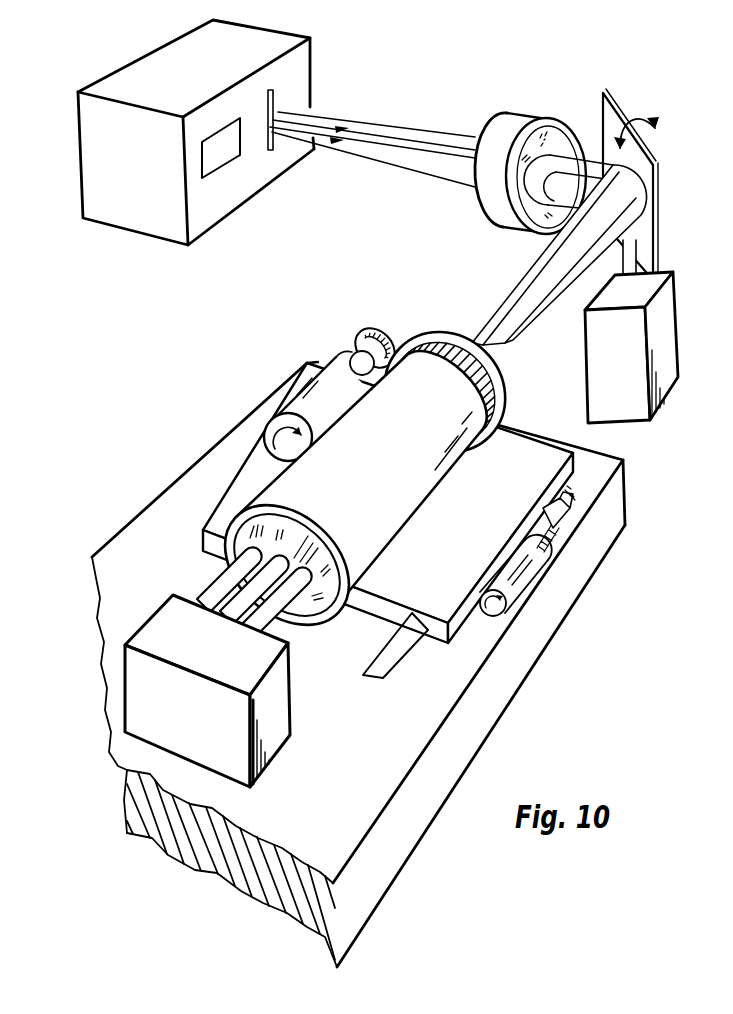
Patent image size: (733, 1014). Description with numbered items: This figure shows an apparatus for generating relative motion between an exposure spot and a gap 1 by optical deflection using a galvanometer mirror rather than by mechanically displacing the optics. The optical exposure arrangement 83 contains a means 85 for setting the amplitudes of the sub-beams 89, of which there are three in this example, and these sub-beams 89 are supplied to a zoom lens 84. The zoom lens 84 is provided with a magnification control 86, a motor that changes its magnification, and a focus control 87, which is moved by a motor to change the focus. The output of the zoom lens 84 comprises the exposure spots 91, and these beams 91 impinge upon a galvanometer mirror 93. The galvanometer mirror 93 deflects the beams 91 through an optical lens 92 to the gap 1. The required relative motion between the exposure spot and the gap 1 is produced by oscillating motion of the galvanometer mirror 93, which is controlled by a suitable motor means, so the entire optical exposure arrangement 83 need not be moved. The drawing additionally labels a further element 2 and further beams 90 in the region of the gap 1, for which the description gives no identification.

The gap 1 is at (273, 142).
The window of light source housing 2 is at (222, 158).
The optical exposure arrangement 83 is at (233, 453).
The zoom lens 84 is at (387, 521).
The means for setting the amplitudes of the sub-beams 85 is at (277, 710).
The magnification setting means 86 is at (328, 390).
The focusing setting means 87 is at (530, 457).
The sub-beams 89 is at (218, 574).
The light beams 90 is at (282, 112).
The exposure spots 91 is at (502, 303).
The optical lens 92 is at (568, 142).
The galvanometer mirror 93 is at (640, 240).